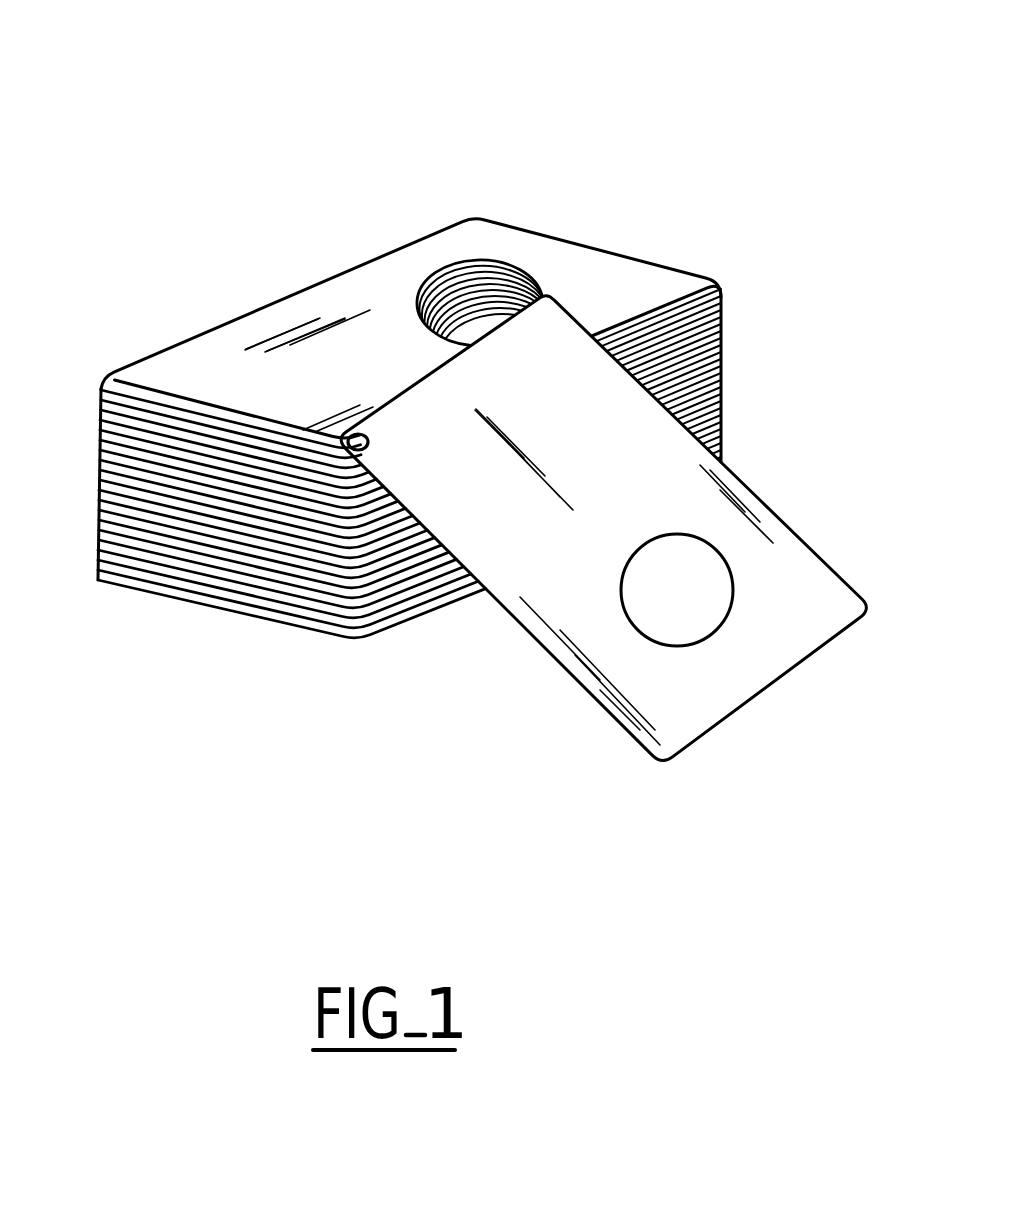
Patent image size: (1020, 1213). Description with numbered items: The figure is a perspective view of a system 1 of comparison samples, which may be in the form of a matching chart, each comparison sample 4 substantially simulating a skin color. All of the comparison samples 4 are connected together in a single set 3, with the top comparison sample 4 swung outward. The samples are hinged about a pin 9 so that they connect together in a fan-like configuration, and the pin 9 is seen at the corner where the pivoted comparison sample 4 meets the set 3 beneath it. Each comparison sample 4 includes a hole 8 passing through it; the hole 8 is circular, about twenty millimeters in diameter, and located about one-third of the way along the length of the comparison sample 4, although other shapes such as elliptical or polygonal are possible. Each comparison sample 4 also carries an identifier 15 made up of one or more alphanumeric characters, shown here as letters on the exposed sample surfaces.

The system 1 is at (460, 439).
The set 3 is at (182, 383).
The comparison sample 4 is at (663, 703).
The hole 8 is at (420, 283).
The pin 9 is at (358, 433).
The identifier 15 is at (265, 388).